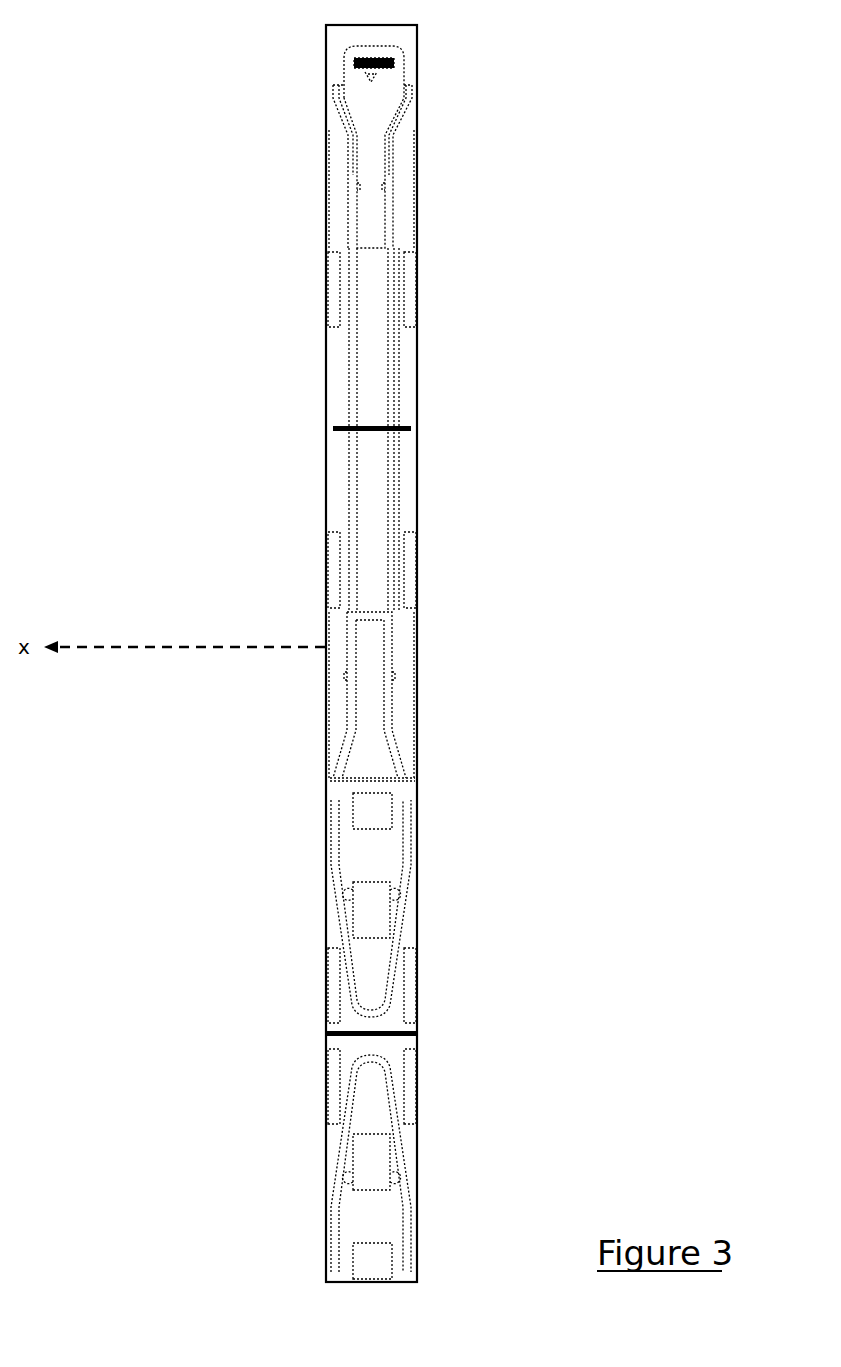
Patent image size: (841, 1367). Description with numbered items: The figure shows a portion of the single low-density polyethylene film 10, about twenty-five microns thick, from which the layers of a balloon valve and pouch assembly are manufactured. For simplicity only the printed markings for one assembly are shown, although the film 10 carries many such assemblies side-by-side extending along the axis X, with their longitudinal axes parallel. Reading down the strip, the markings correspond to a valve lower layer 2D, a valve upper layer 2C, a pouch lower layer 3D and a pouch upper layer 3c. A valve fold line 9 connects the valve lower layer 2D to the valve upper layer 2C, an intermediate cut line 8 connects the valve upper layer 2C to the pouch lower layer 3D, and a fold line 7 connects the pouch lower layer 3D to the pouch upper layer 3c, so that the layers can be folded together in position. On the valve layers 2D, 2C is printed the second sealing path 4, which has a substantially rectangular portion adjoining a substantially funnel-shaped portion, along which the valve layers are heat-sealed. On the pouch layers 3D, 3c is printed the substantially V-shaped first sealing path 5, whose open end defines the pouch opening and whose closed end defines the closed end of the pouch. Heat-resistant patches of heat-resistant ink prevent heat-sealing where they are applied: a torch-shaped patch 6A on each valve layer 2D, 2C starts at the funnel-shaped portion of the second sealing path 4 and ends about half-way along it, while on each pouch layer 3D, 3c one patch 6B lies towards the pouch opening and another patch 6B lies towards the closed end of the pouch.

The low-density polyethylene film 10 is at (140, 82).
The heat-resistant patch 6A is at (375, 104).
The heat-resistant patch 6B is at (375, 815).
The second sealing path 4 is at (353, 372).
The valve fold line 9 is at (333, 430).
The intermediate cut line 8 is at (335, 778).
The fold line 7 is at (333, 1033).
The first sealing path 5 is at (397, 973).
The valve lower layer 2D is at (303, 100).
The valve upper layer 2C is at (298, 556).
The pouch lower layer 3D is at (296, 913).
The pouch upper layer 3c is at (298, 1162).